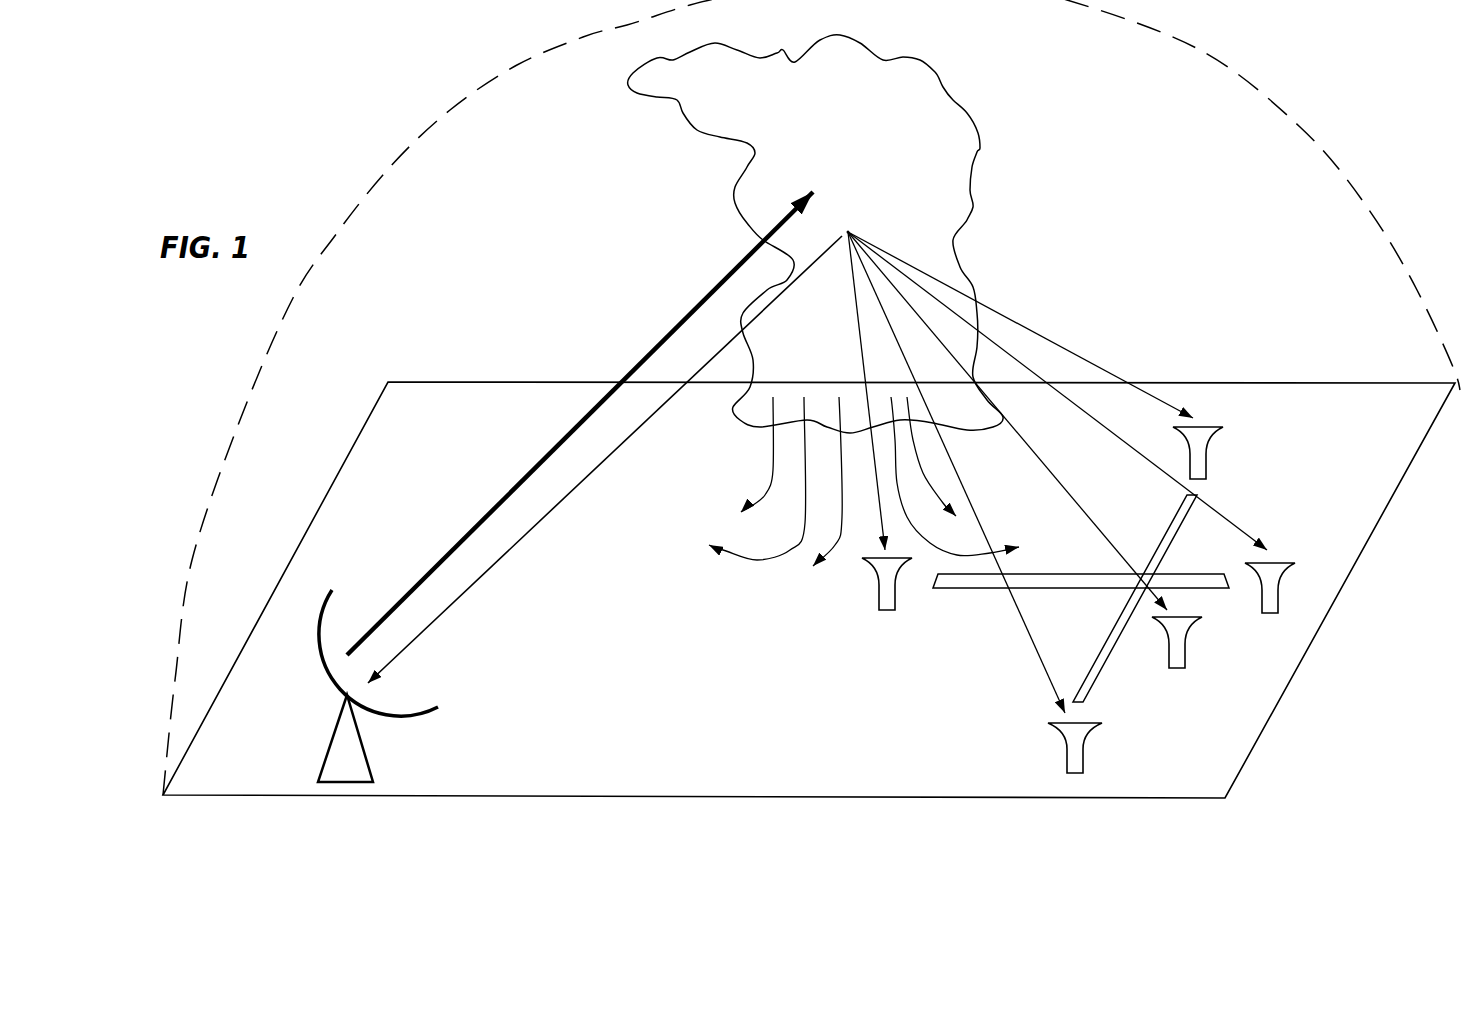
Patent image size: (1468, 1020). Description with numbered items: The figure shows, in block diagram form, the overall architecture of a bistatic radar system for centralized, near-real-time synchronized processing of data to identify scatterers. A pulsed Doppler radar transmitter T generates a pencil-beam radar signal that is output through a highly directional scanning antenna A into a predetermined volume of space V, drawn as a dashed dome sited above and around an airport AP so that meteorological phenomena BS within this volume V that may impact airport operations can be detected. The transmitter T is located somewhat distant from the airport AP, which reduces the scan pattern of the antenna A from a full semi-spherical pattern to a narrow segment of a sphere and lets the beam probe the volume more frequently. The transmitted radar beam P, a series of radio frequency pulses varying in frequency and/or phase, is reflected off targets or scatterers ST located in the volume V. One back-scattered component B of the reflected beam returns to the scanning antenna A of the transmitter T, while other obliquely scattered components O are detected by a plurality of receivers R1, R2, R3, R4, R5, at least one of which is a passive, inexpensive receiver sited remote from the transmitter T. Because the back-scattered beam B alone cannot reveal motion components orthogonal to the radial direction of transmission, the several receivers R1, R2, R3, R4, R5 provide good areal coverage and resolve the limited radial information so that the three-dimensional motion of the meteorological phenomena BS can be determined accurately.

The predetermined volume of space V is at (1095, 56).
The meteorological phenomena BS is at (980, 150).
The targets (scatterers) ST is at (867, 190).
The obliquely scattered components of the reflected radar beam O is at (1103, 367).
The transmitted radar beam P is at (477, 526).
The back scattered component of the reflected radar beam B is at (486, 576).
The scanning antenna A is at (322, 650).
The pulsed Doppler radar transmitter T is at (363, 748).
The receiver R1 is at (895, 602).
The receiver R2 is at (1206, 450).
The receiver R3 is at (1262, 598).
The receiver R4 is at (1175, 668).
The receiver R5 is at (1083, 757).
The airport AP is at (1118, 613).